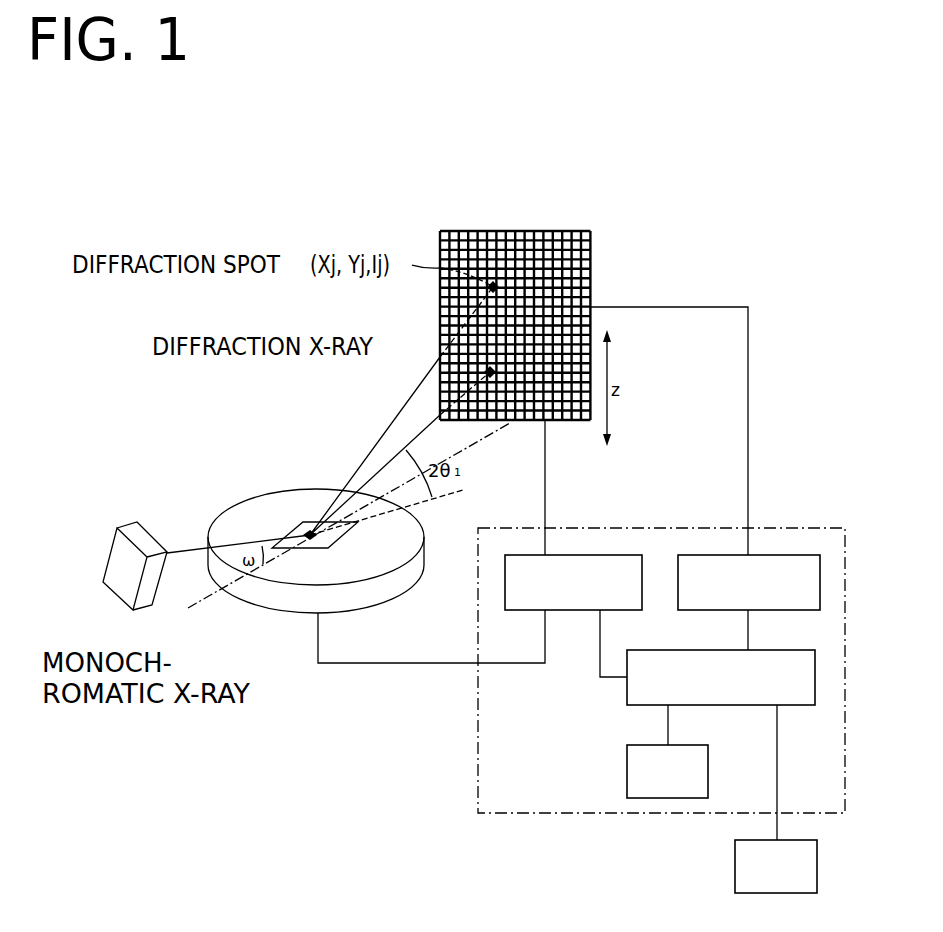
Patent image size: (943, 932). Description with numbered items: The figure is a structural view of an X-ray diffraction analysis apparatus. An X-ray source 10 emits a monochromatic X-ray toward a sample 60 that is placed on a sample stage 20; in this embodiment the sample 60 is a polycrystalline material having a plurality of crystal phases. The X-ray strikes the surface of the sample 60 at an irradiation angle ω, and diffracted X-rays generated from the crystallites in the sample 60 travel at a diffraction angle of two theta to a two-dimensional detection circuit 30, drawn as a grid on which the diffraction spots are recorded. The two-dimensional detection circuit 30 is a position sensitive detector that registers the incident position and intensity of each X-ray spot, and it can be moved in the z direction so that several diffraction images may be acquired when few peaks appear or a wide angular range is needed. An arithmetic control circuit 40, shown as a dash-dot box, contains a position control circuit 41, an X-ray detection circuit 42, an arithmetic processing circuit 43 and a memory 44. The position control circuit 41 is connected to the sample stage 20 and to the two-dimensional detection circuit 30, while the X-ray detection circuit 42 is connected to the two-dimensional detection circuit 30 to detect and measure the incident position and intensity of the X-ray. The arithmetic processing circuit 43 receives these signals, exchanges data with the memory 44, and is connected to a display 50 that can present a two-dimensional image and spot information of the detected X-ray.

The X-ray source 10 is at (112, 586).
The sample stage 20 is at (287, 598).
The two-dimensional detection circuit 30 is at (592, 280).
The arithmetic control circuit 40 is at (795, 526).
The position control circuit 41 is at (613, 553).
The X-ray detection circuit 42 is at (790, 553).
The arithmetic processing circuit 43 is at (790, 648).
The memory 44 is at (680, 745).
The display 50 is at (787, 840).
The sample 60 is at (309, 531).